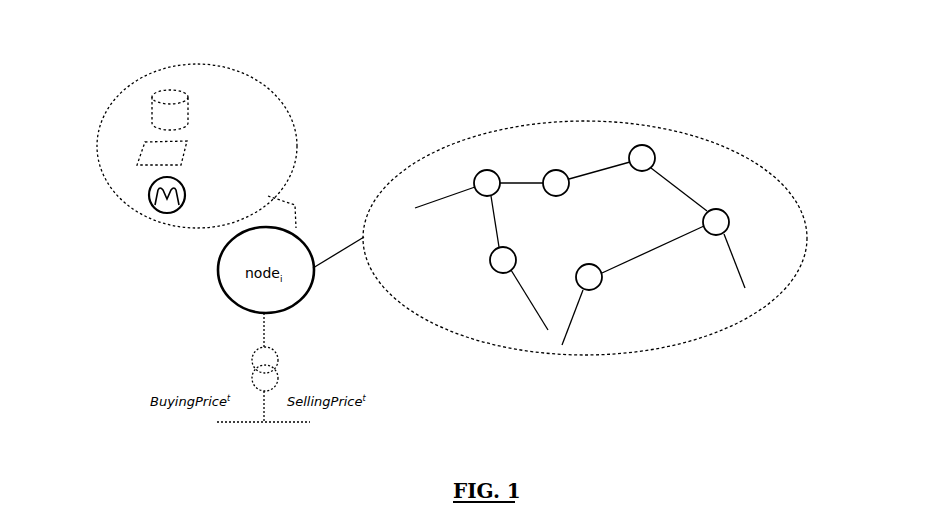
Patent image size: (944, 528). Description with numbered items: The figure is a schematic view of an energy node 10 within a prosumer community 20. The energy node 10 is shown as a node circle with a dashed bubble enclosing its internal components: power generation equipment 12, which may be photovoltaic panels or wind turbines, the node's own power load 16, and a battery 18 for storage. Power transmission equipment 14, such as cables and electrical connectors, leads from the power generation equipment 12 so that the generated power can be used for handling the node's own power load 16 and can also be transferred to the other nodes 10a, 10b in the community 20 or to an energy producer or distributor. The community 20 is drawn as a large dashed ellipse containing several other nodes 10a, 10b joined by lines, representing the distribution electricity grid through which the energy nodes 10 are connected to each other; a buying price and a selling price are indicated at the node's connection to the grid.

The energy node 10 is at (122, 63).
The power generation equipment 12 is at (175, 150).
The power transmission equipment 14 is at (337, 258).
The power load 16 is at (149, 191).
The battery 18 is at (173, 115).
The community 20 is at (612, 225).
The other node 10a is at (590, 278).
The other node 10b is at (717, 224).